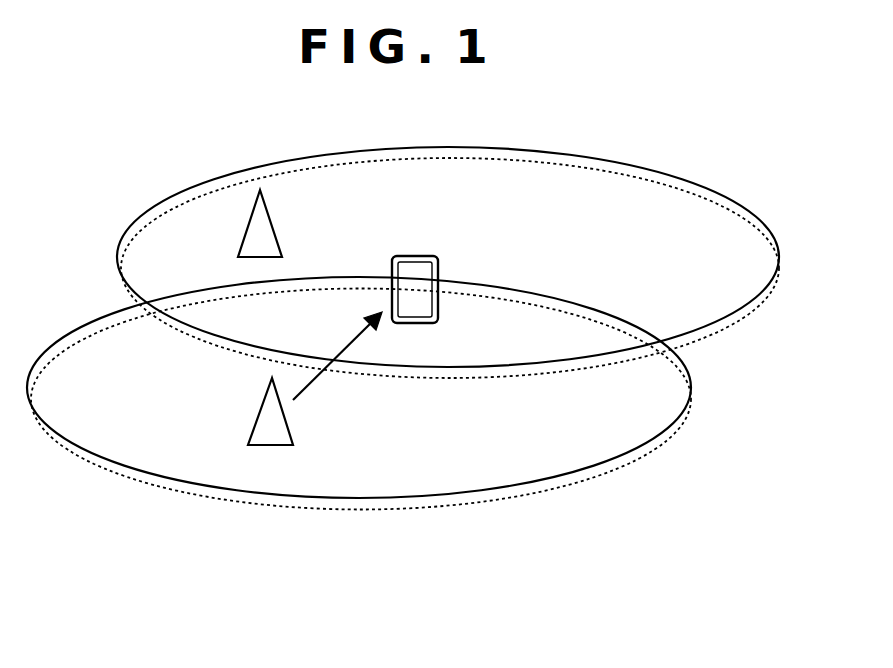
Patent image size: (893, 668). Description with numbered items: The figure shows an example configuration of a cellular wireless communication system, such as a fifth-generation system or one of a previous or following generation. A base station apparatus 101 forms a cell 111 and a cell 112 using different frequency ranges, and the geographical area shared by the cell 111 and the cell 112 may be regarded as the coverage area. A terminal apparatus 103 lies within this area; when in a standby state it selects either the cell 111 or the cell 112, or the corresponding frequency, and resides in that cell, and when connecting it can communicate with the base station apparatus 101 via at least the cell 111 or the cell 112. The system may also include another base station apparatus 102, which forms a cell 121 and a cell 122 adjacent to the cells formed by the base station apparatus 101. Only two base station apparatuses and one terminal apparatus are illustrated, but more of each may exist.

The base station apparatus 101 is at (260, 428).
The another base station apparatus 102 is at (272, 221).
The terminal apparatus 103 is at (440, 301).
The cell 111 is at (218, 490).
The cell 112 is at (480, 505).
The cell 121 is at (655, 168).
The cell 122 is at (520, 158).